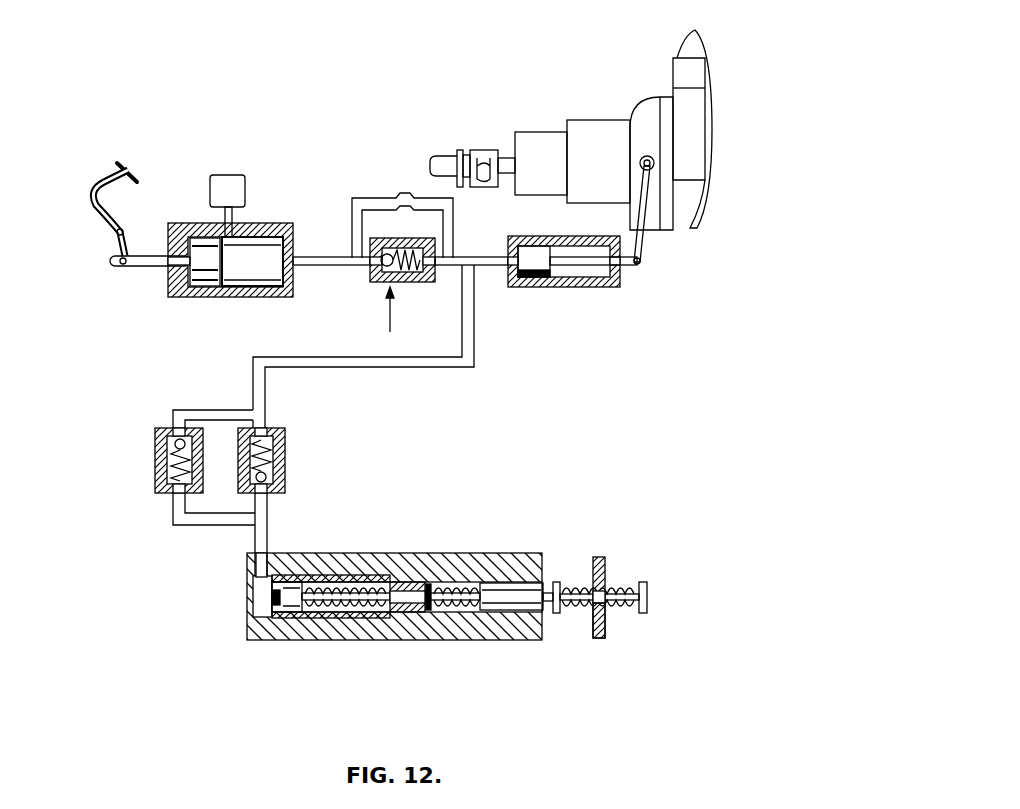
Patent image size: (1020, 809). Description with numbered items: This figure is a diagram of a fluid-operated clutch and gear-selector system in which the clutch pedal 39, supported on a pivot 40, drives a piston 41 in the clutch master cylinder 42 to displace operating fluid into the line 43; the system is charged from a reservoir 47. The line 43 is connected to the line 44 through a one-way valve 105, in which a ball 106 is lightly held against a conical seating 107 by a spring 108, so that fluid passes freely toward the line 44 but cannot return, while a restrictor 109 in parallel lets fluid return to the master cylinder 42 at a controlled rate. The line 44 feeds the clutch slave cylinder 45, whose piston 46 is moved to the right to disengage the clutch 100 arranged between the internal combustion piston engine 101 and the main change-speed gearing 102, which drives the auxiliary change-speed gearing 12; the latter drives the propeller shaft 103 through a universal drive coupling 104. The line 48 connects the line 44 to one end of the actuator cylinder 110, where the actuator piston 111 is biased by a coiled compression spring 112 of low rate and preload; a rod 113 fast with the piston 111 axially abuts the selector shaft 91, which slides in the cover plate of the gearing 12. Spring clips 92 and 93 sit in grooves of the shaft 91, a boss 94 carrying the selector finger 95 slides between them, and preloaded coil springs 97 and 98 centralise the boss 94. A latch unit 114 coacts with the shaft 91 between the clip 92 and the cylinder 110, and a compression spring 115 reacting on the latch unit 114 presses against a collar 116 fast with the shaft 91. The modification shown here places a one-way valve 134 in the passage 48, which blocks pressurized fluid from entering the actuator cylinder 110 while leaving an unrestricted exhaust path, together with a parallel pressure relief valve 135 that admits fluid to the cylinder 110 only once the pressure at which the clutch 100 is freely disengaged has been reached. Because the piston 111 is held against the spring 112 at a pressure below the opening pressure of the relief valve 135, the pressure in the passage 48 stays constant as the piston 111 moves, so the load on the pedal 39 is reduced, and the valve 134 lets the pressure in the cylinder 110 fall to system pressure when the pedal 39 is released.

The auxiliary change-speed gearing 12 is at (535, 137).
The clutch pedal 39 is at (133, 172).
The pivot 40 is at (117, 236).
The piston 41 is at (207, 250).
The clutch master cylinder 42 is at (267, 250).
The line 43 is at (318, 258).
The line 44 is at (487, 257).
The clutch slave cylinder 45 is at (522, 250).
The piston 46 is at (547, 254).
The reservoir 47 is at (235, 184).
The line 48 is at (476, 342).
The selector shaft 91 is at (453, 592).
The spring clip 92 is at (557, 582).
The spring clip 93 is at (648, 592).
The boss 94 is at (607, 610).
The selector finger 95 is at (600, 639).
The compression coil spring 97 is at (575, 610).
The compression coil spring 98 is at (623, 586).
The clutch 100 is at (645, 110).
The internal combustion piston engine 101 is at (688, 168).
The main change-speed gearing 102 is at (590, 130).
The propeller shaft 103 is at (442, 158).
The universal drive coupling 104 is at (487, 151).
The one-way valve 105 is at (389, 321).
The ball 106 is at (381, 266).
The conical seating 107 is at (385, 280).
The spring 108 is at (405, 276).
The restrictor 109 is at (398, 203).
The actuator cylinder 110 is at (256, 582).
The actuator piston 111 is at (280, 604).
The coiled compression spring 112 is at (323, 608).
The rod 113 is at (360, 601).
The latch unit 114 is at (510, 600).
The compression spring 115 is at (453, 612).
The collar 116 is at (430, 612).
The one-way valve 134 is at (288, 452).
The pressure relief valve 135 is at (154, 449).